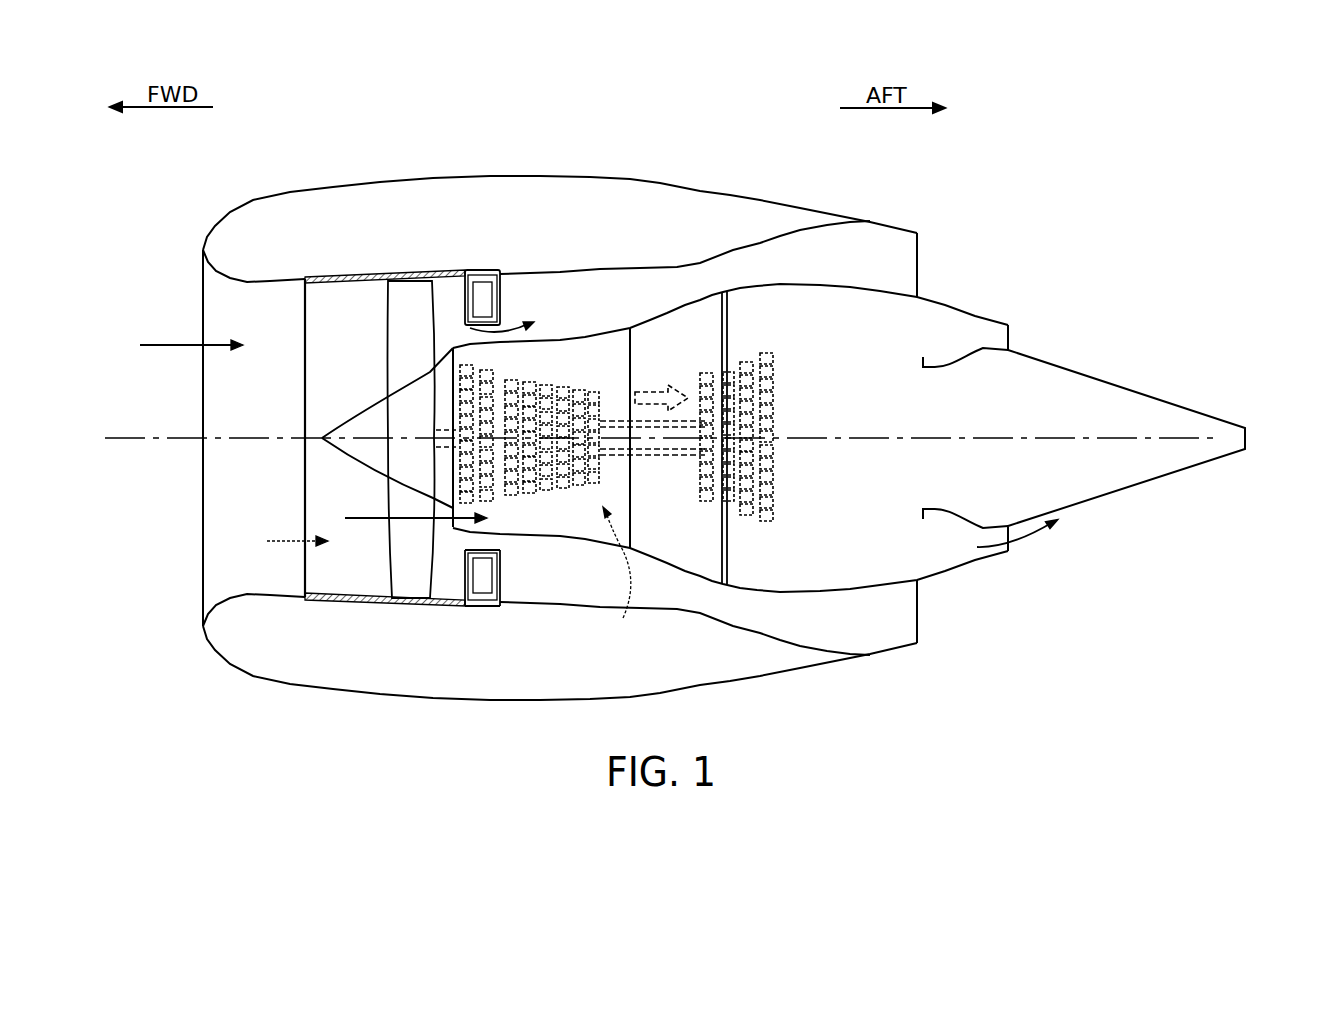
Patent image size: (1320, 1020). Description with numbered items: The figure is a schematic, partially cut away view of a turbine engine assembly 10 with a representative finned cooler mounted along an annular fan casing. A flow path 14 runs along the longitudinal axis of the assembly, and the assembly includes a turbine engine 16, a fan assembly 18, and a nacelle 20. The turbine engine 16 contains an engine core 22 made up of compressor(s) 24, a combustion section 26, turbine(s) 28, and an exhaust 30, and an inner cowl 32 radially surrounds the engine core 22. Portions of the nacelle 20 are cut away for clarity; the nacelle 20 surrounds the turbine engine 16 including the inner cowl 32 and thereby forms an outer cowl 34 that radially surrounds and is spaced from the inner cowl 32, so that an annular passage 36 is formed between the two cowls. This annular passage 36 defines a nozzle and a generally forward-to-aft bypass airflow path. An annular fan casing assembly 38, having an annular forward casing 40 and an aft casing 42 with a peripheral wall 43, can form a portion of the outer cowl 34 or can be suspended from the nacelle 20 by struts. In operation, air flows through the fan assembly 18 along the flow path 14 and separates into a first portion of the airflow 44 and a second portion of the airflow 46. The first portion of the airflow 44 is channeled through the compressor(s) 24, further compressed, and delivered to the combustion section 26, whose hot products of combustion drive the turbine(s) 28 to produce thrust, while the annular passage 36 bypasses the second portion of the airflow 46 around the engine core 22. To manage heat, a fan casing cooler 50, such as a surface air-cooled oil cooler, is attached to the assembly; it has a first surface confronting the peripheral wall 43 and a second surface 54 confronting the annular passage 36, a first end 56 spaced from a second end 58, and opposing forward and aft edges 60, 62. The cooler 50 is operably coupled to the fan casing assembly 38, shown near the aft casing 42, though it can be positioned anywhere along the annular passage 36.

The turbine engine assembly 10 is at (395, 143).
The flow path 14 is at (167, 343).
The turbine engine 16 is at (620, 330).
The fan assembly 18 is at (400, 308).
The nacelle 20 is at (226, 214).
The engine core 22 is at (621, 576).
The compressor 24 is at (545, 475).
The combustion section 26 is at (664, 460).
The turbine 28 is at (738, 510).
The exhaust 30 is at (953, 555).
The inner cowl 32 is at (738, 290).
The outer cowl 34 is at (820, 237).
The annular passage 36 is at (640, 288).
The annular fan casing assembly 38 is at (283, 542).
The annular forward casing 40 is at (305, 487).
The aft casing 42 is at (502, 548).
The peripheral wall 43 is at (312, 333).
The first portion of the airflow 44 is at (368, 517).
The second portion of the airflow 46 is at (508, 324).
The fan casing cooler 50 is at (481, 264).
The second surface 54 is at (466, 595).
The first end 56 is at (485, 612).
The second end 58 is at (478, 543).
The forward edge 60 is at (458, 580).
The aft edge 62 is at (500, 588).